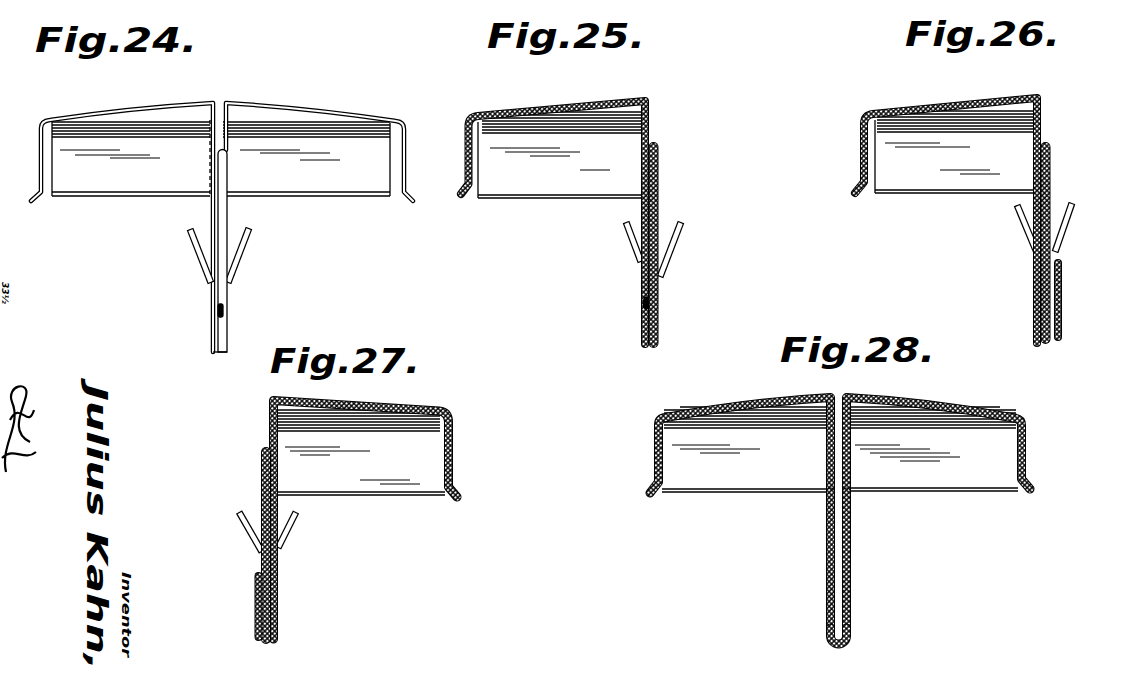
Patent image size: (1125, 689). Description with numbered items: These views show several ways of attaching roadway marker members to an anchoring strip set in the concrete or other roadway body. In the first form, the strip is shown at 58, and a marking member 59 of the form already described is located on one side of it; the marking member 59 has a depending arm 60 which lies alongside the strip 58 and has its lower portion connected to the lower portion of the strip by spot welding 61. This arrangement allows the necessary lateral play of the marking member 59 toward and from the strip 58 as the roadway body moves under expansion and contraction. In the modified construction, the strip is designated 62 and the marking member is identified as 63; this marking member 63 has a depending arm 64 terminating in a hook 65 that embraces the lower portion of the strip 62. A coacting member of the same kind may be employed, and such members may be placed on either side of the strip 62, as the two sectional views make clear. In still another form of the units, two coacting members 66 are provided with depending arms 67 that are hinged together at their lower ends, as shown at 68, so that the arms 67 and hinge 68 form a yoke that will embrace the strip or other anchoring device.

In FIG. 24, the strip 58 is at (220, 210).
In FIG. 25, the strip 58 is at (660, 195).
In FIG. 24, the marking member 59 is at (146, 111).
In FIG. 25, the marking member 59 is at (592, 104).
In FIG. 24, the depending arm 60 is at (210, 297).
In FIG. 25, the depending arm 60 is at (640, 212).
In FIG. 24, the spot welding 61 is at (217, 315).
In FIG. 25, the spot welding 61 is at (645, 303).
In FIG. 26, the strip 62 is at (1049, 172).
In FIG. 27, the strip 62 is at (262, 496).
In FIG. 26, the marking member 63 is at (942, 105).
In FIG. 27, the marking member 63 is at (395, 409).
In FIG. 26, the depending arm 64 is at (1037, 216).
In FIG. 26, the hook 65 is at (1050, 342).
In FIG. 27, the hook 65 is at (275, 646).
In FIG. 28, the coacting members 66 is at (745, 389).
In FIG. 28, the depending arms 67 is at (827, 538).
In FIG. 28, the hinge 68 is at (851, 639).